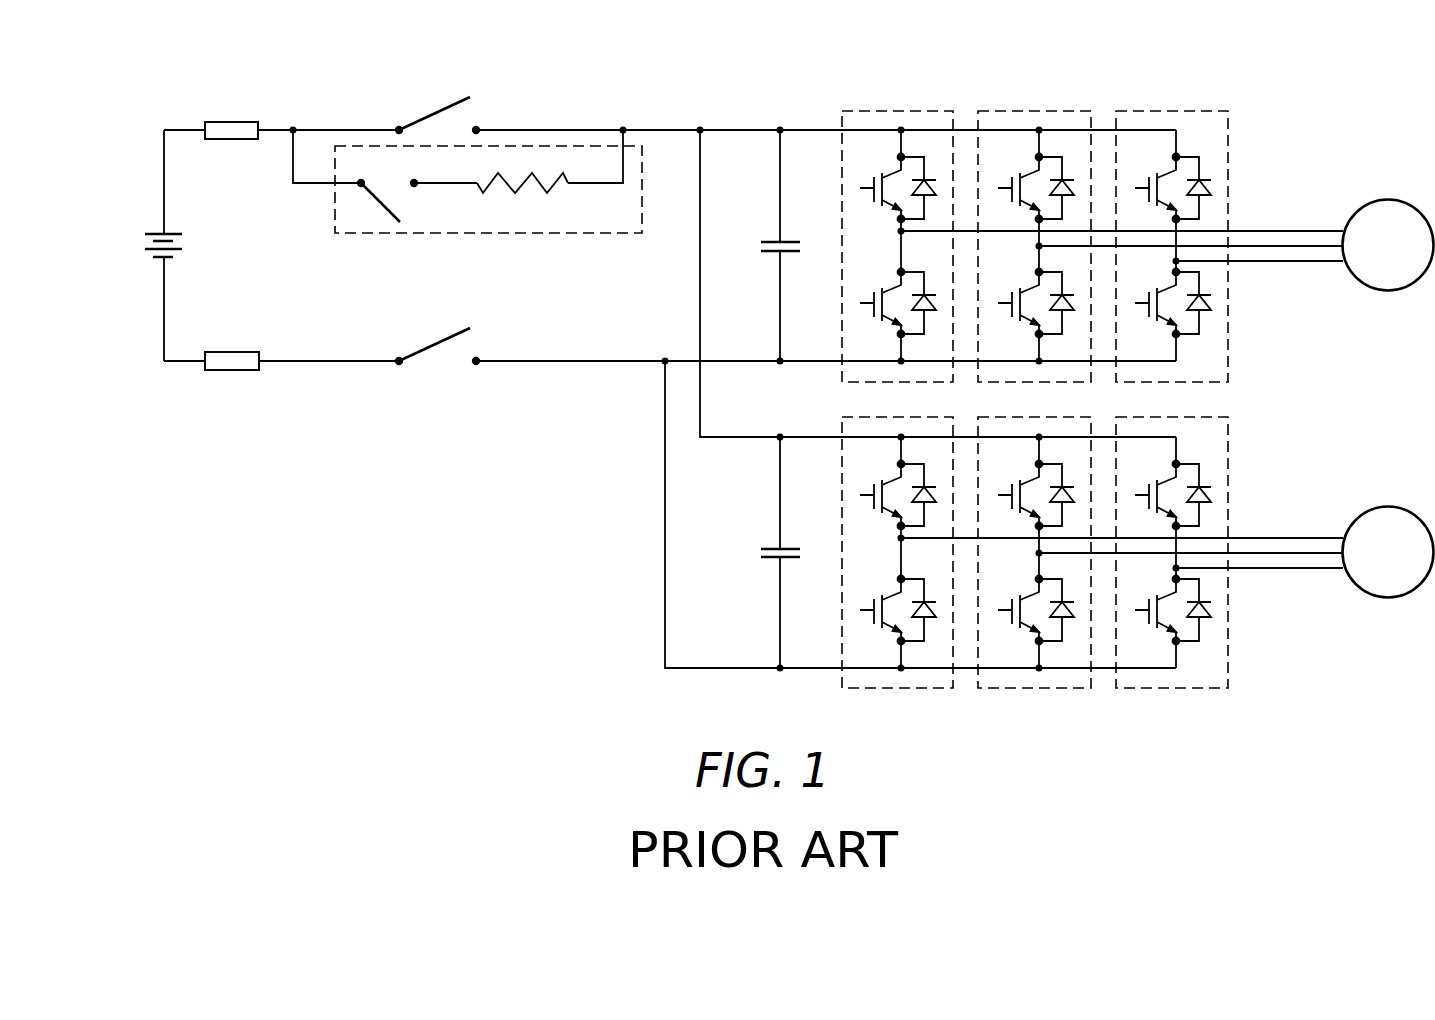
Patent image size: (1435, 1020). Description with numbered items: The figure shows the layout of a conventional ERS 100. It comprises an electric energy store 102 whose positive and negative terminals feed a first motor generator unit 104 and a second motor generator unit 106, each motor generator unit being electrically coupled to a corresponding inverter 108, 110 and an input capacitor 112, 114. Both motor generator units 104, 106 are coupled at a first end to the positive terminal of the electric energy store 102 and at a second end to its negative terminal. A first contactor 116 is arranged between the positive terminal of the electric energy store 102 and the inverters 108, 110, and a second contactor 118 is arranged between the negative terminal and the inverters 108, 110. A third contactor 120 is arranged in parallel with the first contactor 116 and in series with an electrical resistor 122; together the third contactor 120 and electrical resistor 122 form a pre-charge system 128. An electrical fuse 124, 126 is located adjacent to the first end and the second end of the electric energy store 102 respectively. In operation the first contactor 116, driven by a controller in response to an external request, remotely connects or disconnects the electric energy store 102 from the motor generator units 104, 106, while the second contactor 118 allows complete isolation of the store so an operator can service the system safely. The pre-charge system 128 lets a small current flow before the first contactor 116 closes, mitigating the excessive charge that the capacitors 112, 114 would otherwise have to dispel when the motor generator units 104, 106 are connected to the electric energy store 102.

The ERS 100 is at (316, 532).
The electric energy store 102 is at (150, 232).
The first motor generator unit 104 is at (1386, 199).
The second motor generator unit 106 is at (1386, 506).
The inverter 108 is at (1227, 97).
The inverter 110 is at (1227, 700).
The input capacitor 112 is at (767, 240).
The input capacitor 114 is at (760, 553).
The first contactor 116 is at (434, 110).
The second contactor 118 is at (438, 346).
The third contactor 120 is at (379, 215).
The electrical resistor 122 is at (554, 172).
The electrical fuse 124 is at (229, 121).
The electrical fuse 126 is at (231, 373).
The pre-charge system 128 is at (467, 196).